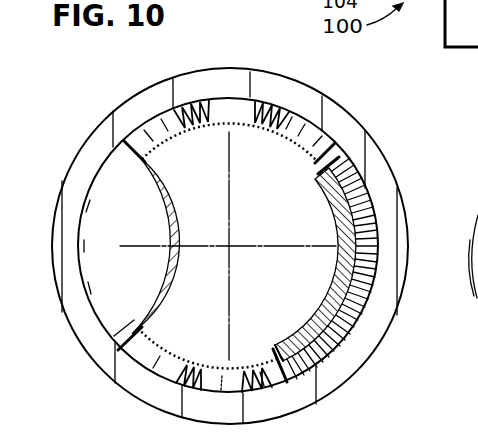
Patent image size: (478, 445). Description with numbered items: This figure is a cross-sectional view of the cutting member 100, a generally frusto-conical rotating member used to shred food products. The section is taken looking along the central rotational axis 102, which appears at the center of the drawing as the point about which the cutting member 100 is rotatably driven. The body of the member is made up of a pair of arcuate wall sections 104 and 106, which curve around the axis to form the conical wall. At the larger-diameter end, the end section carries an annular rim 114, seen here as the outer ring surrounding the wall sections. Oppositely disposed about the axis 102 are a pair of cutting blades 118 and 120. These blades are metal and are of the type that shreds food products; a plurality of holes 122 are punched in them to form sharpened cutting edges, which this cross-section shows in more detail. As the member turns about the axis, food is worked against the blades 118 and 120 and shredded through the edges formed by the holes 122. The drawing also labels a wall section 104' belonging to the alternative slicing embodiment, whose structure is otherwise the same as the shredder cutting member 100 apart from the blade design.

The cutting member 100 is at (119, 392).
The central rotational axis 102 is at (231, 243).
The arcuate wall section 104 is at (110, 235).
The wall section 104' is at (450, 278).
The arcuate wall section 106 is at (364, 192).
The annular rim 114 is at (143, 92).
The cutting blade 118 is at (321, 126).
The cutting blade 120 is at (328, 372).
The holes 122 is at (196, 101).